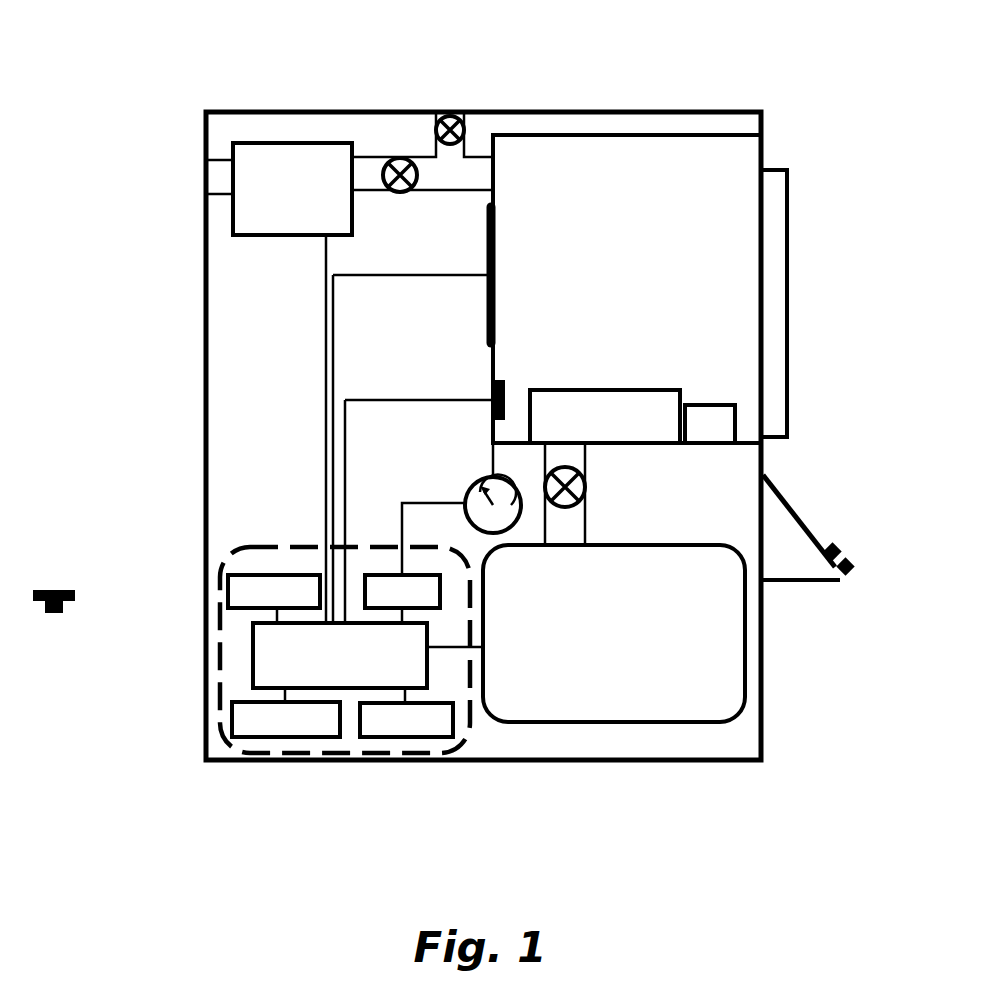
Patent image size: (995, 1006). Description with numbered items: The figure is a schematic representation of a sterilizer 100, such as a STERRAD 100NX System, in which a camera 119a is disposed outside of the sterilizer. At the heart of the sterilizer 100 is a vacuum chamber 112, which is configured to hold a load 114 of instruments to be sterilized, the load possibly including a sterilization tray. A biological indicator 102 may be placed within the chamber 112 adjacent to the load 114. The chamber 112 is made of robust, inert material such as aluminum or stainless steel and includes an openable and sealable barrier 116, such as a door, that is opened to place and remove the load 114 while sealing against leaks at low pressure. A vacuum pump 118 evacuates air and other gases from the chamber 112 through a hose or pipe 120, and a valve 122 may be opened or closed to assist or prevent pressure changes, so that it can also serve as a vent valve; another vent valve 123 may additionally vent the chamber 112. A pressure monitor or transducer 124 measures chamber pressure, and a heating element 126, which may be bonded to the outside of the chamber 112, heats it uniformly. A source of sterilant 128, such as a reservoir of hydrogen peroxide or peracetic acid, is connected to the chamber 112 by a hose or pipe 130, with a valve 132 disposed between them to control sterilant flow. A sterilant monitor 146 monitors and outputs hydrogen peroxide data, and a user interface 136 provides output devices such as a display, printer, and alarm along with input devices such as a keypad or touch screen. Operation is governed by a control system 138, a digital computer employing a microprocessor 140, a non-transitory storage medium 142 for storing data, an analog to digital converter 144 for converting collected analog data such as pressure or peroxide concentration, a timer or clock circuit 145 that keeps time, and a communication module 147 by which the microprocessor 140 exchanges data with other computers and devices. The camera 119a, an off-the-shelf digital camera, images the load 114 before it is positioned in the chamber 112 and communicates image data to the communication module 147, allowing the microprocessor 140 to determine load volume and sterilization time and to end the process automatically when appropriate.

The sterilizer 100 is at (156, 167).
The biological indicator 102 is at (712, 405).
The vacuum chamber 112 is at (682, 133).
The load 114 is at (578, 390).
The openable and sealable barrier 116 is at (790, 212).
The vacuum pump 118 is at (281, 143).
The camera 119a is at (56, 588).
The hose or pipe 120 is at (366, 157).
The valve 122 is at (398, 158).
The vent valve 123 is at (453, 117).
The pressure monitor or transducer 124 is at (468, 492).
The heating element 126 is at (485, 237).
The source of sterilant 128 is at (580, 722).
The hose or pipe 130 is at (587, 457).
The valve 132 is at (587, 487).
The user interface 136 is at (803, 522).
The control system 138 is at (224, 745).
The microprocessor 140 is at (253, 657).
The non-transitory storage medium 142 is at (297, 737).
The analog to digital converter 144 is at (383, 575).
The timer or clock circuit 145 is at (415, 737).
The sterilant monitor 146 is at (492, 388).
The communication module 147 is at (292, 575).